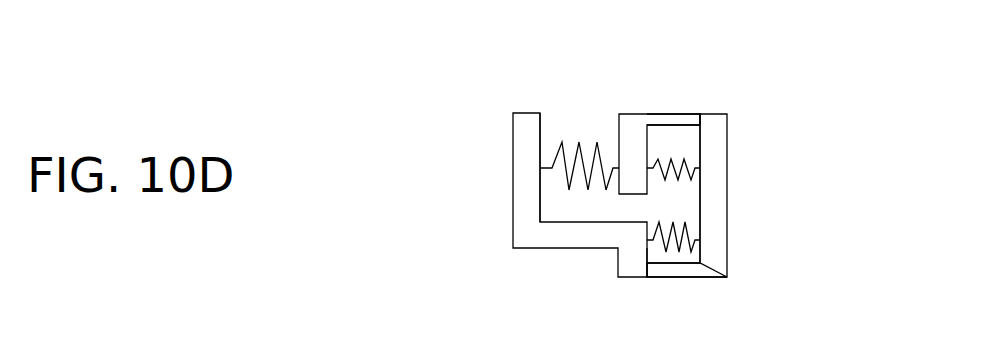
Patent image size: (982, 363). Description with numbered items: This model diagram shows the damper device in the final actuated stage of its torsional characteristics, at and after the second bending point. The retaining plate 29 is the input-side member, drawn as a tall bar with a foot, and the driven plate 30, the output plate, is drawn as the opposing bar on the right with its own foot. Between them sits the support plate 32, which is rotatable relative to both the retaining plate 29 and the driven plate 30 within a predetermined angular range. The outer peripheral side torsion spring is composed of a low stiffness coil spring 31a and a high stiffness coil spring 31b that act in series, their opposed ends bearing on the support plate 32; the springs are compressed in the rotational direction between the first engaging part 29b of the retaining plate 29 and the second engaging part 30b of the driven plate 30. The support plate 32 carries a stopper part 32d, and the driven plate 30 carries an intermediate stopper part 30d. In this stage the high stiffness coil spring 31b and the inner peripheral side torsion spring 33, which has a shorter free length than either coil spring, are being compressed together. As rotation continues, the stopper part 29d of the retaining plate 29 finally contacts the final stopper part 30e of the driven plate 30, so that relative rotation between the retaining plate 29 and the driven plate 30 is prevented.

The retaining plate 29 is at (508, 233).
The first engaging part 29b is at (541, 152).
The stopper part 29d is at (644, 266).
The driven plate 30 is at (752, 152).
The intermediate stopper part 30d is at (704, 130).
The second engaging part 30b is at (705, 185).
The final stopper part 30e is at (672, 268).
The low stiffness coil spring 31a is at (672, 158).
The high stiffness coil spring 31b is at (565, 141).
The support plate 32 is at (631, 110).
The stopper part 32d is at (657, 122).
The inner peripheral side torsion spring 33 is at (673, 222).